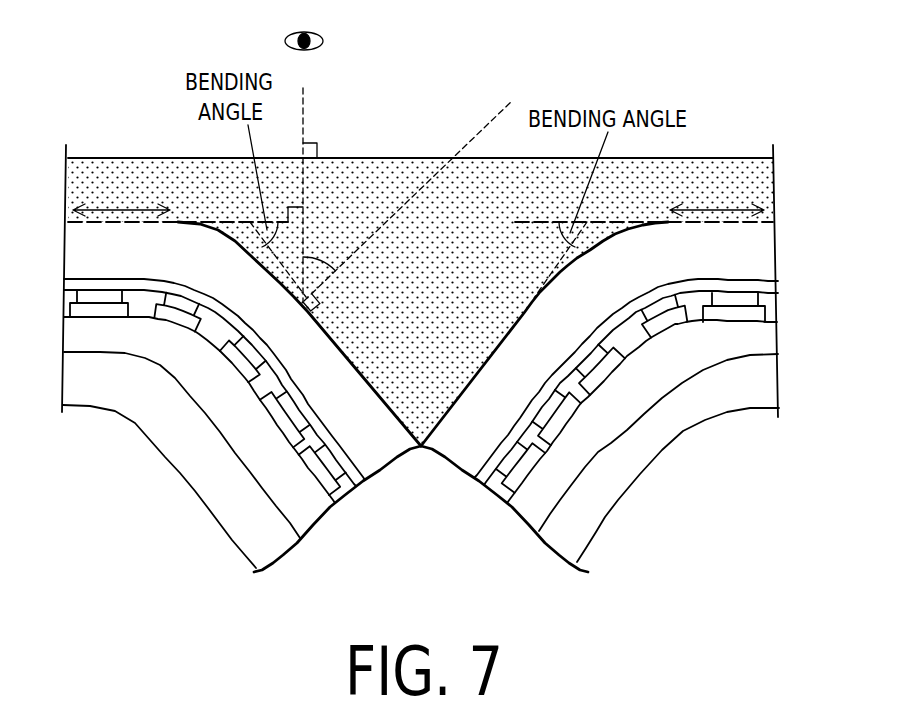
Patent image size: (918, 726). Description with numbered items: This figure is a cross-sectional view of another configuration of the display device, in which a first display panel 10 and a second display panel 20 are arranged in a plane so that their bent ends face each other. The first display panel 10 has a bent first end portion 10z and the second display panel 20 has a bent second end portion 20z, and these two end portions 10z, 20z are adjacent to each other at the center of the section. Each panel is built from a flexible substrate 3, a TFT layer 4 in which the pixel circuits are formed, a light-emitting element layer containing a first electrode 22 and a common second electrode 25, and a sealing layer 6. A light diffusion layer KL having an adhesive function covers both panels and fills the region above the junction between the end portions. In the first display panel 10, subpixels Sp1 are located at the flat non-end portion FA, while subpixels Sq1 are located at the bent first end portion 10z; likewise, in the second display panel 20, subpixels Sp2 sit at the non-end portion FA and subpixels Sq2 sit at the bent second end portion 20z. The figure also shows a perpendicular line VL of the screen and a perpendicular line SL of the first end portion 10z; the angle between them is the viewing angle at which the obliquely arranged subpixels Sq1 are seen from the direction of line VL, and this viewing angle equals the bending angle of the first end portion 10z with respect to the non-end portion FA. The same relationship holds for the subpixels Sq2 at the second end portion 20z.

The substrate 3 is at (66, 386).
The TFT layer 4 is at (67, 341).
The sealing layer 6 is at (67, 241).
The first display panel 10 is at (153, 480).
The second display panel 20 is at (698, 478).
The first electrode 22 is at (70, 312).
The second electrode 25 is at (67, 283).
The first end portion 10z is at (287, 573).
The second end portion 20z is at (555, 573).
The subpixels Sp1 is at (106, 274).
The subpixels Sp2 is at (738, 275).
The subpixels Sq1 is at (202, 289).
The subpixels Sq2 is at (637, 288).
The non-end portion FA is at (107, 208).
The light diffusion layer KL is at (82, 189).
The perpendicular line of the screen VL is at (304, 171).
The perpendicular line of the first end portion SL is at (418, 191).